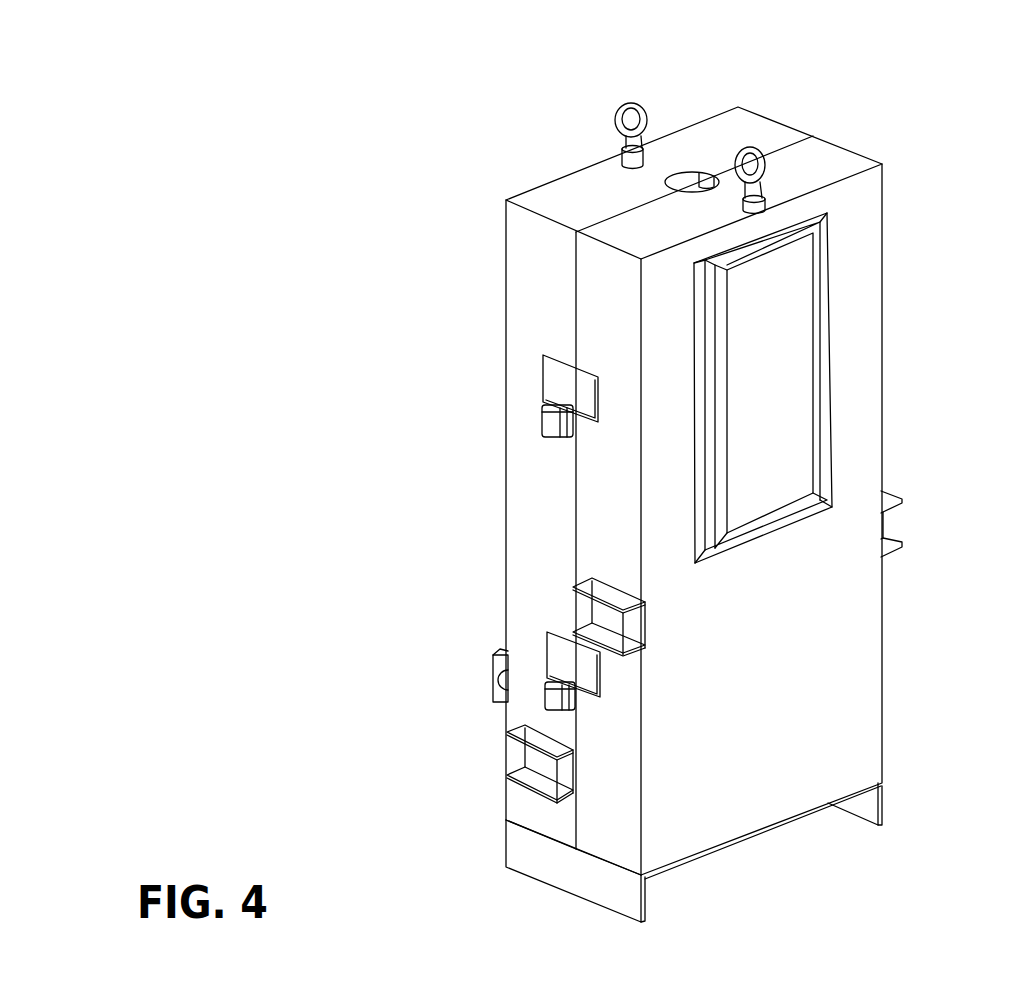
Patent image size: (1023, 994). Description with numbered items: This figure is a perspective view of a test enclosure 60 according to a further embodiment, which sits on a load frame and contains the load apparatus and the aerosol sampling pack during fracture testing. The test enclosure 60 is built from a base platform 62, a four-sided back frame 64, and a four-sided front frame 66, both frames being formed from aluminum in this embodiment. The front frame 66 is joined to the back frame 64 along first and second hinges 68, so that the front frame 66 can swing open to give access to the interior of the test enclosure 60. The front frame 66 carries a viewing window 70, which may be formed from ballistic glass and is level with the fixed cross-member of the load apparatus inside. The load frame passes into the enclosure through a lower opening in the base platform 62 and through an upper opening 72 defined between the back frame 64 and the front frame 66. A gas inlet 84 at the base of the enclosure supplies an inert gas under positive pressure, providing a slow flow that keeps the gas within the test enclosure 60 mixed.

The test enclosure 60 is at (940, 128).
The base platform 62 is at (647, 893).
The back frame 64 is at (535, 290).
The front frame 66 is at (857, 235).
The hinge 68 is at (543, 420).
The viewing window 70 is at (818, 337).
The upper opening 72 is at (690, 173).
The gas inlet 84 is at (492, 670).